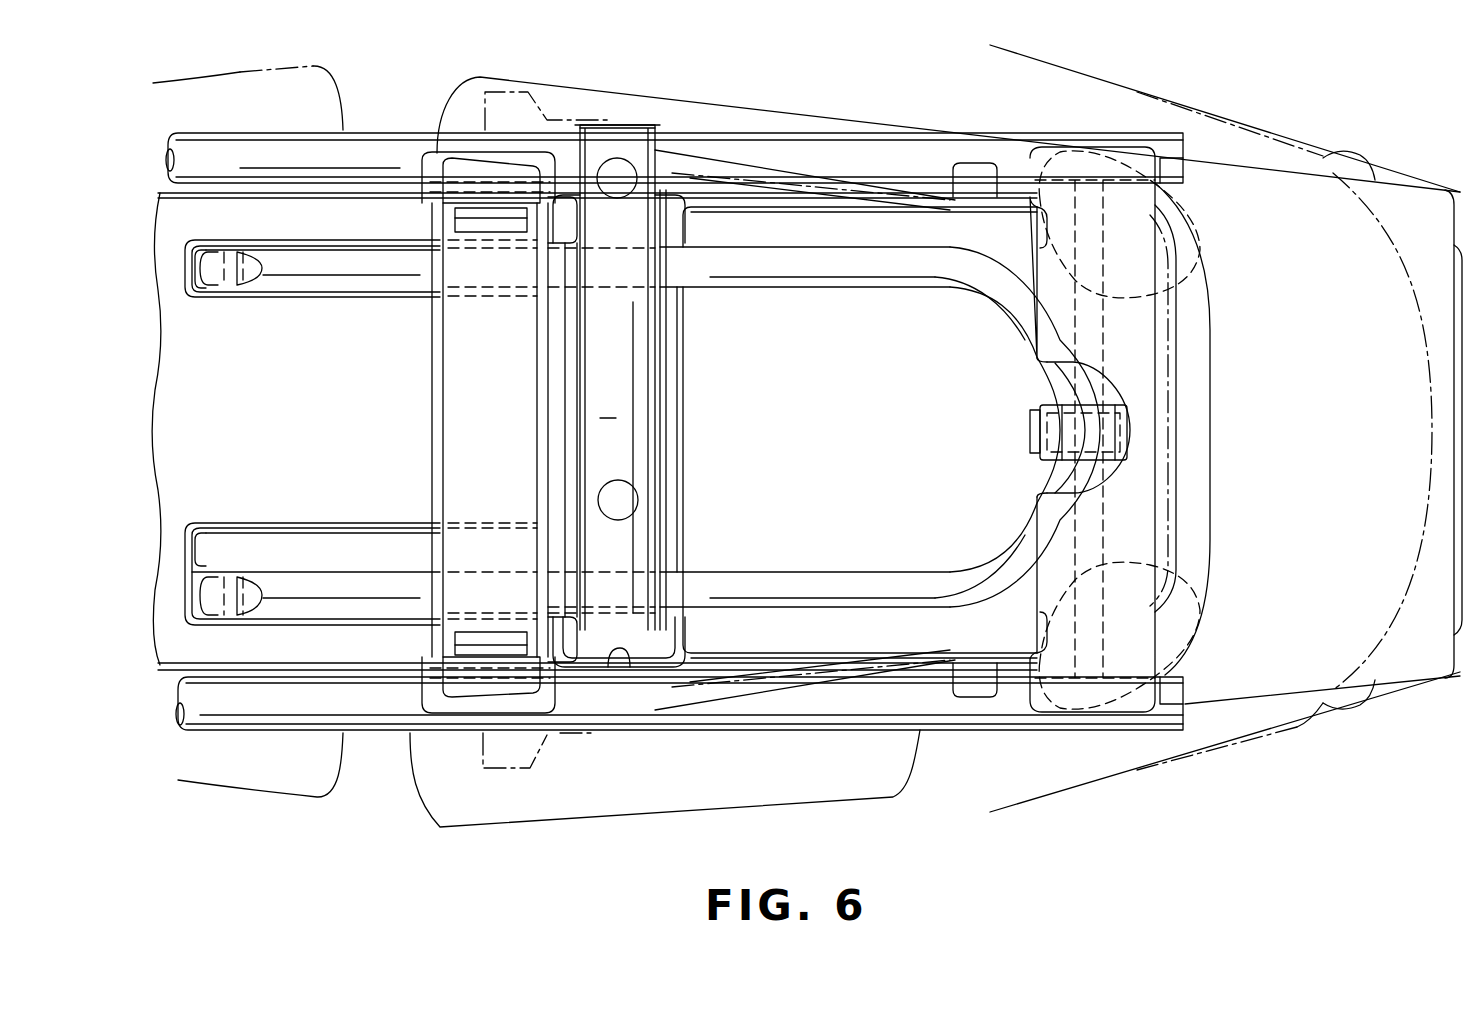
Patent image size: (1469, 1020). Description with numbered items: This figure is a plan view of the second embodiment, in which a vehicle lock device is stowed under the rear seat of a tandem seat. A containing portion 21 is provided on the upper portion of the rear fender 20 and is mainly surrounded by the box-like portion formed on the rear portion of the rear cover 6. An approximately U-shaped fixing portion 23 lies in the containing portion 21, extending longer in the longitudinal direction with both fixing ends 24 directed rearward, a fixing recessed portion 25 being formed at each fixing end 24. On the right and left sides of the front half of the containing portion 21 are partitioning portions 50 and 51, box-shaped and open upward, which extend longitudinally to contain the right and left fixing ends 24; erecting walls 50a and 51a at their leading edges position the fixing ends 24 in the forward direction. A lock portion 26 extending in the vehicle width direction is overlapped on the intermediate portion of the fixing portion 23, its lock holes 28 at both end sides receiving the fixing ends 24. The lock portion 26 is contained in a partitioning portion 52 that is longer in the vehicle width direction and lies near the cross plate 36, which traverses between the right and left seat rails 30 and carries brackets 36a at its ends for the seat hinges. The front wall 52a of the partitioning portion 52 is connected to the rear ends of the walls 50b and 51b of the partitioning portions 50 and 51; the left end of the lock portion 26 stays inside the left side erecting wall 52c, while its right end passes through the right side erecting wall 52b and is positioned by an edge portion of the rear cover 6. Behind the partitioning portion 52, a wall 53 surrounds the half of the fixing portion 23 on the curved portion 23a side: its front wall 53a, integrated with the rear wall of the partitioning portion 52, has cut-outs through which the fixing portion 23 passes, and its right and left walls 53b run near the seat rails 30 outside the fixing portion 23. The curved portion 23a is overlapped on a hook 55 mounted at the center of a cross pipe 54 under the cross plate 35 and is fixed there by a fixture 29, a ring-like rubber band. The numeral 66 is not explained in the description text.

The rear cover 6 is at (1132, 100).
The rear fender 20 is at (166, 397).
The containing portion 21 is at (332, 431).
The fixing portion 23 is at (895, 427).
The curved portion 23a is at (1035, 420).
The fixing ends 24 is at (213, 268).
The fixing recessed portion 25 is at (245, 270).
The lock portion 26 is at (635, 420).
The lock holes 28 is at (620, 178).
The fixture 29 is at (1045, 398).
The seat rails 30 is at (940, 148).
The cross plate 35 is at (1035, 246).
The cross plate 36 is at (450, 467).
The brackets 36a is at (470, 213).
The partitioning portion 50 is at (407, 276).
The erecting wall 50a is at (197, 250).
The side wall 50b is at (340, 240).
The partitioning portion 51 is at (407, 568).
The erecting wall 51a is at (200, 532).
The left wall 51b is at (305, 523).
The partitioning portion 52 is at (601, 418).
The front wall 52a is at (570, 410).
The right side erecting wall 52b is at (690, 172).
The left side erecting wall 52c is at (617, 668).
The wall 53 is at (800, 387).
The front wall 53a is at (692, 360).
The right and left walls 53b is at (828, 212).
The cross pipe 54 is at (1190, 252).
The hook 55 is at (1032, 440).
The tab 66 is at (606, 122).